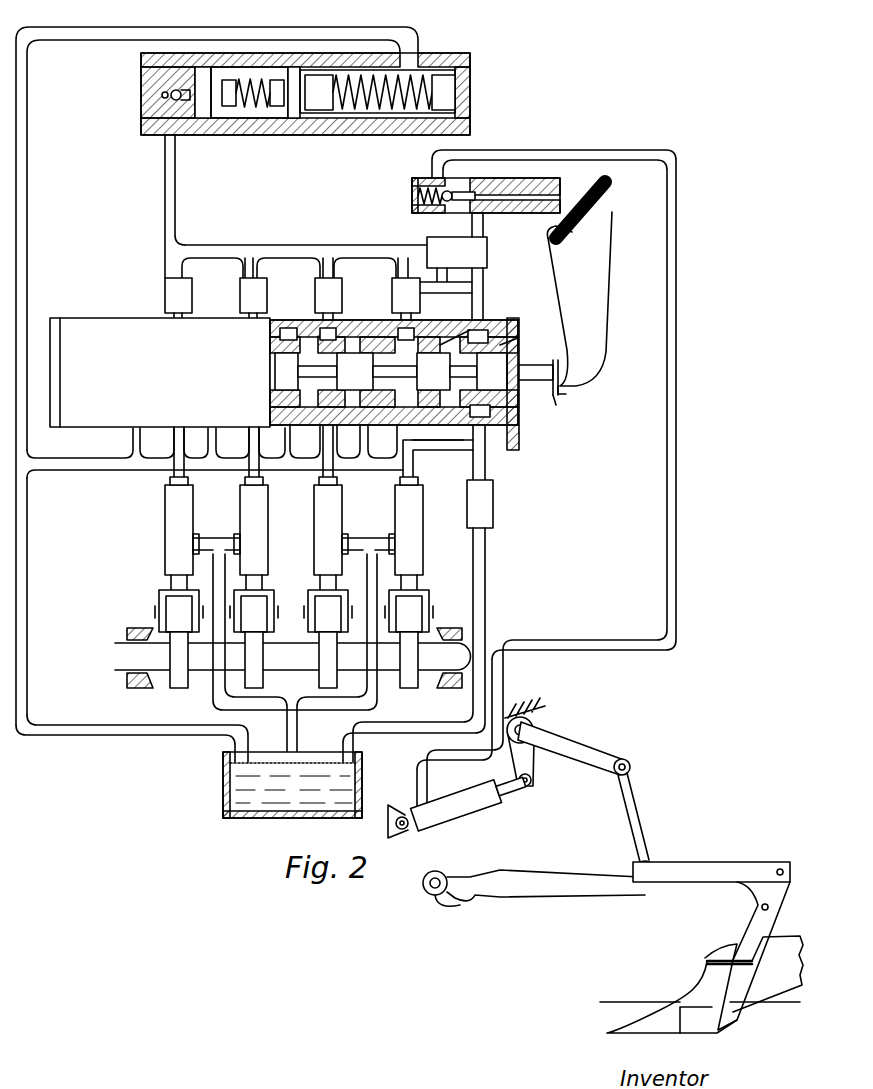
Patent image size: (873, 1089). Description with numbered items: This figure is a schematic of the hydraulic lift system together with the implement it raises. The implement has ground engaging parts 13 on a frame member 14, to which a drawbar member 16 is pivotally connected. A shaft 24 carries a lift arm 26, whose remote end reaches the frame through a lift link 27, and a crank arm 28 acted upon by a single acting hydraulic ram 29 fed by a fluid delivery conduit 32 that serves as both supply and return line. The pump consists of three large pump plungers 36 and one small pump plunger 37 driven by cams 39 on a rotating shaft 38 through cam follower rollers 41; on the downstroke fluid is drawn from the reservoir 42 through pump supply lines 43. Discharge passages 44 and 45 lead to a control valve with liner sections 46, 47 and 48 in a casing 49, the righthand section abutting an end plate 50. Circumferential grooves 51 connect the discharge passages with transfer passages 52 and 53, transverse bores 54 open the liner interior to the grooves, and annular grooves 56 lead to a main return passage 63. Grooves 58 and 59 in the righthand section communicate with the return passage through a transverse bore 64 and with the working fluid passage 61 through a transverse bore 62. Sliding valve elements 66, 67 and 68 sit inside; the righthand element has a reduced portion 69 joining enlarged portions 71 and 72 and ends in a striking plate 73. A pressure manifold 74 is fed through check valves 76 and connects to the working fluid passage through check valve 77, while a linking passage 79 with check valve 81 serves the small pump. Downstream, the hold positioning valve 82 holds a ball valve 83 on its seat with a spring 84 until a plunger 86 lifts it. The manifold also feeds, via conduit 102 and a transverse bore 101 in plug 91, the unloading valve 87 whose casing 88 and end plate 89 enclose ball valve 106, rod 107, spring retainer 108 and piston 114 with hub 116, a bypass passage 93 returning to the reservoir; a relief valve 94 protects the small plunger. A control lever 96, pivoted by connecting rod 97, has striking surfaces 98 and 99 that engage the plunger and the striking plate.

The ground engaging parts 13 is at (700, 968).
The frame member 14 is at (705, 862).
The drawbar member 16 is at (558, 897).
The shaft 24 is at (533, 728).
The lift arm 26 is at (595, 750).
The lift link 27 is at (637, 812).
The crank arm 28 is at (533, 770).
The hydraulic ram 29 is at (480, 800).
The fluid delivery conduit 32 is at (676, 600).
The large pump plungers 36 is at (165, 523).
The small pump plunger 37 is at (395, 515).
The rotating shaft 38 is at (298, 670).
The cams 39 is at (180, 688).
The cam follower rollers 41 is at (166, 603).
The reservoir 42 is at (223, 797).
The pump supply lines 43 is at (213, 668).
The pump discharge passage 44 is at (184, 482).
The pump discharge passage 45 is at (405, 472).
The cylindrical liner section 46 is at (275, 345).
The cylindrical liner section 47 is at (345, 340).
The cylindrical liner section 48 is at (519, 405).
The control valve casing 49 is at (130, 318).
The end plate 50 is at (520, 440).
The circumferential grooves 51 is at (353, 420).
The transfer passages 52 is at (192, 276).
The transfer passage 53 is at (398, 335).
The transverse bore 54 is at (343, 441).
The annular grooves 56 is at (285, 328).
The circumferential groove 58 is at (447, 347).
The circumferential groove 59 is at (478, 425).
The working fluid passage 61 is at (488, 334).
The transverse bore 62 is at (505, 343).
The main return passage 63 is at (448, 450).
The transverse bore 64 is at (442, 293).
The cylindrical valve element 66 is at (275, 368).
The cylindrical valve element 67 is at (300, 372).
The cylindrical valve element 68 is at (536, 365).
The intermediate reduced portion 69 is at (450, 450).
The enlarged cylindrical portion 71 is at (393, 371).
The enlarged cylindrical portion 72 is at (505, 380).
The striking plate 73 is at (557, 398).
The pressure manifold 74 is at (298, 256).
The spring biased ball check valve 76 is at (192, 300).
The spring biased ball check valve 77 is at (487, 255).
The linking passage 79 is at (457, 252).
The spring biased ball check valve 81 is at (403, 282).
The hold positioning valve 82 is at (510, 213).
The ball valve 83 is at (445, 202).
The spiral compression spring 84 is at (412, 193).
The plunger 86 is at (480, 195).
The unloading valve 87 is at (450, 53).
The cylindrical casing 88 is at (316, 118).
The end plate 89 is at (470, 95).
The plug 91 is at (141, 79).
The bypass passage 93 is at (412, 35).
The relief valve 94 is at (493, 505).
The control lever 96 is at (605, 300).
The connecting rod 97 is at (608, 200).
The striking surface 98 is at (570, 195).
The striking surface 99 is at (566, 392).
The transverse bore 101 is at (172, 96).
The conduit 102 is at (165, 186).
The ball valve 106 is at (175, 118).
The rod 107 is at (262, 110).
The spring retainer 108 is at (208, 118).
The piston 114 is at (296, 118).
The elongated hub portion 116 is at (352, 118).